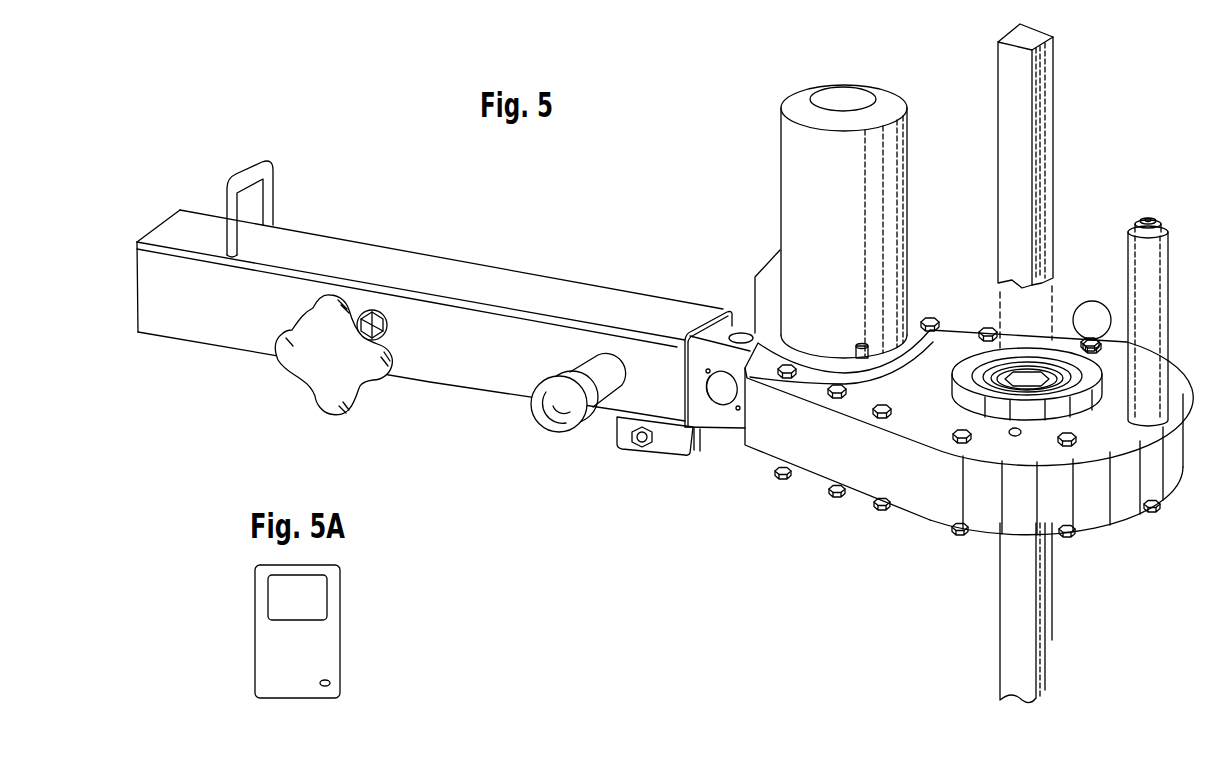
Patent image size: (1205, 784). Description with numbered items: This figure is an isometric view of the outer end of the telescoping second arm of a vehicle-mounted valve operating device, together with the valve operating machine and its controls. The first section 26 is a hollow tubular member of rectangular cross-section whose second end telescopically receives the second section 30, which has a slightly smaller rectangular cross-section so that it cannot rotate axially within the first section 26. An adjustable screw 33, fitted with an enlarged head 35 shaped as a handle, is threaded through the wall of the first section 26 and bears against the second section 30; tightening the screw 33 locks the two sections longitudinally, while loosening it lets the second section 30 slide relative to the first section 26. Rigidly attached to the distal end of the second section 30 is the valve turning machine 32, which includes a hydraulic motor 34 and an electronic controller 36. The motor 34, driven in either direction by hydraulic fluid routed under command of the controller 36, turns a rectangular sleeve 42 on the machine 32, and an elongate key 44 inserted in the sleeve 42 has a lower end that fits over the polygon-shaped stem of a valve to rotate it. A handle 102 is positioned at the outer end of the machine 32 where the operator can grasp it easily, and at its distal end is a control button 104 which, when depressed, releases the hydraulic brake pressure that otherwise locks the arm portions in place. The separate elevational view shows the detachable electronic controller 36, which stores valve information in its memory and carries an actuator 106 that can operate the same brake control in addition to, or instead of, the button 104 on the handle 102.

In FIG. 5, the first section of second arm portion 26 is at (584, 280).
In FIG. 5, the second section 30 is at (697, 407).
In FIG. 5, the valve turning machine 32 is at (871, 470).
In FIG. 5, the adjustable screw 33 is at (380, 306).
In FIG. 5, the hydraulic motor 34 is at (908, 148).
In FIG. 5, the enlarged head 35 is at (307, 389).
In FIG. 5A, the electronic controller 36 is at (256, 642).
In FIG. 5, the rectangular sleeve 42 is at (1032, 372).
In FIG. 5, the elongate key 44 is at (1053, 86).
In FIG. 5, the handle 102 is at (1128, 262).
In FIG. 5, the control button 104 is at (1147, 214).
In FIG. 5A, the actuator 106 is at (329, 681).